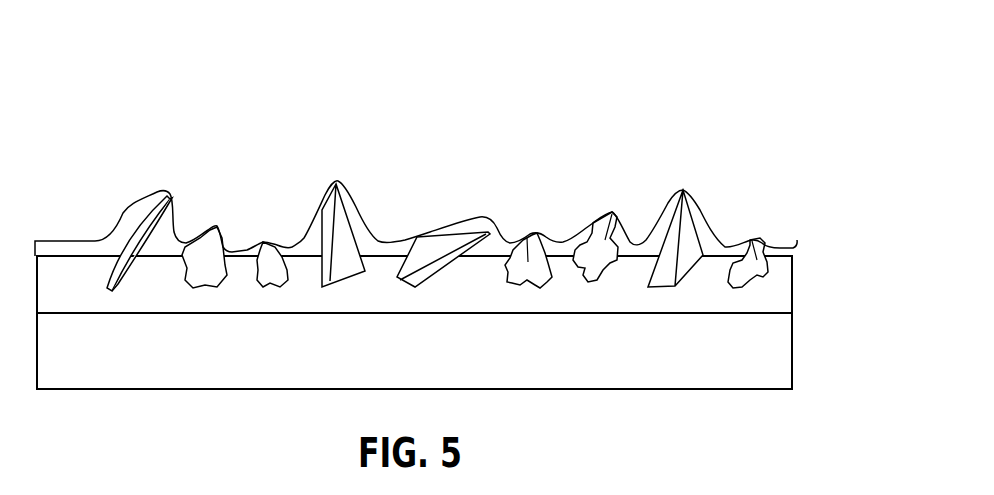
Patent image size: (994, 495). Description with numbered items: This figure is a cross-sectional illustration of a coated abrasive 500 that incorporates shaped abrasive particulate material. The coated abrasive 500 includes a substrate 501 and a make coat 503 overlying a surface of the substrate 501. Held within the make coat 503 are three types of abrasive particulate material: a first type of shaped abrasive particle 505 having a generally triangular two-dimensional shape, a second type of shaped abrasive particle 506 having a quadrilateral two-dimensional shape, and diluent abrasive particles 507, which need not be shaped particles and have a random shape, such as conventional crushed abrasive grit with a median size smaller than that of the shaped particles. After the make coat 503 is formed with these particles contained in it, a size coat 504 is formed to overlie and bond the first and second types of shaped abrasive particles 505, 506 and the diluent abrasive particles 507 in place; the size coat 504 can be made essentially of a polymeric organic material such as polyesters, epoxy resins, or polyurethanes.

The coated abrasive 500 is at (140, 110).
The substrate 501 is at (780, 363).
The make coat 503 is at (780, 297).
The size coat 504 is at (797, 249).
The first type of shaped abrasive particle 505 is at (340, 233).
The second type of shaped abrasive particle 506 is at (170, 195).
The diluent abrasive particles 507 is at (533, 233).